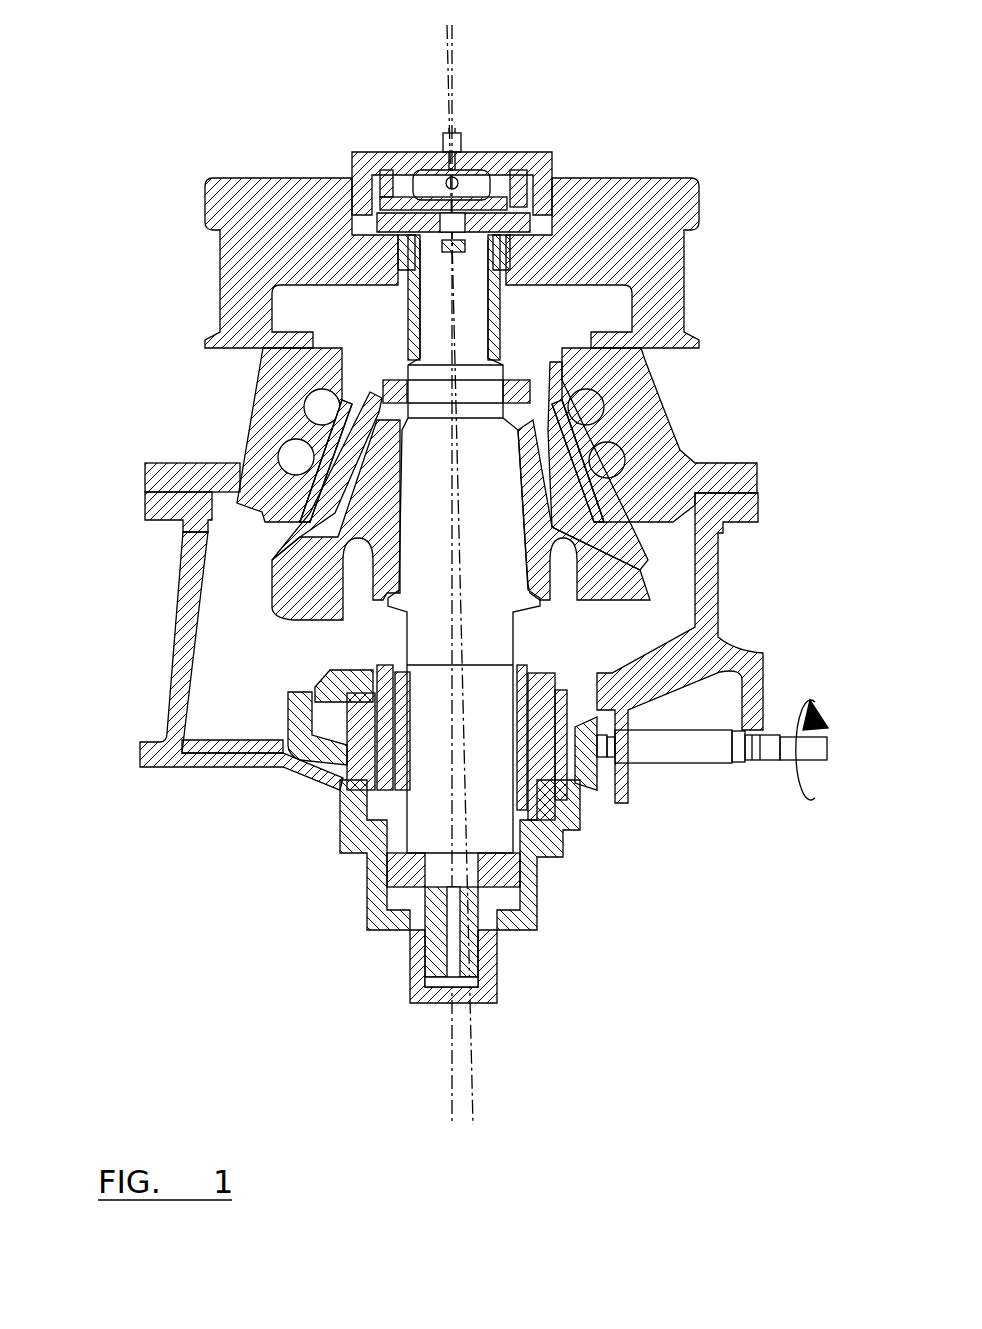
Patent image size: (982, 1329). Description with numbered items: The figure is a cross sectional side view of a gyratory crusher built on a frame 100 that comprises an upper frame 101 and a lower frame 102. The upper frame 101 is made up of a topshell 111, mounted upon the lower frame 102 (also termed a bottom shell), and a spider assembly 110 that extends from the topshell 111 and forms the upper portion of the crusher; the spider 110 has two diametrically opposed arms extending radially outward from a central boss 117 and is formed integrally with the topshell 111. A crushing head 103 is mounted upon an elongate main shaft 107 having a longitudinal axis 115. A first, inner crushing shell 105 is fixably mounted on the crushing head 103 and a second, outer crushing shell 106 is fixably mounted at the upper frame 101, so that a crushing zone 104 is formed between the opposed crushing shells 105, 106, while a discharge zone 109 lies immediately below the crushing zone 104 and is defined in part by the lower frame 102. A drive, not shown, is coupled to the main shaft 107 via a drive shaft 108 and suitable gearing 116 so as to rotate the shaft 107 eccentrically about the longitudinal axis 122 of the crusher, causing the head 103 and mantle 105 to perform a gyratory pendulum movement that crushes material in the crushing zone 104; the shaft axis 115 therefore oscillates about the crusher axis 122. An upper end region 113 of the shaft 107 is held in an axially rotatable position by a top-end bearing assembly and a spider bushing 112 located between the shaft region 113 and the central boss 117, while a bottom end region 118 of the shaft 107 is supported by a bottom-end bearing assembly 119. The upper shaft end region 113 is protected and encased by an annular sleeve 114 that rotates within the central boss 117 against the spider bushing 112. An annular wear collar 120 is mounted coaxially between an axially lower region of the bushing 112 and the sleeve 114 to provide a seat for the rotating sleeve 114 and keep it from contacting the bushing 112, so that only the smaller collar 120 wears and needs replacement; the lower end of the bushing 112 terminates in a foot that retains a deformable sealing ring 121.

The frame 100 is at (142, 490).
The upper frame 101 is at (162, 475).
The lower frame 102 is at (182, 712).
The crushing head 103 is at (300, 620).
The crushing zone 104 is at (333, 452).
The first (inner) crushing shell 105 is at (300, 500).
The second (outer) crushing shell 106 is at (317, 507).
The main shaft 107 is at (447, 538).
The drive shaft 108 is at (678, 752).
The discharge zone 109 is at (240, 567).
The spider assembly 110 is at (667, 293).
The topshell 111 is at (650, 428).
The spider bushing 112 is at (545, 235).
The upper end region of shaft 113 is at (500, 317).
The annular sleeve 114 is at (410, 320).
The longitudinal axis of main shaft 115 is at (447, 92).
The gearing 116 is at (580, 697).
The central boss 117 is at (373, 273).
The bottom end region of shaft 118 is at (507, 838).
The bottom-end bearing assembly 119 is at (377, 863).
The annular wear collar 120 is at (398, 252).
The sealing ring 121 is at (580, 245).
The longitudinal axis of the crusher 122 is at (453, 70).